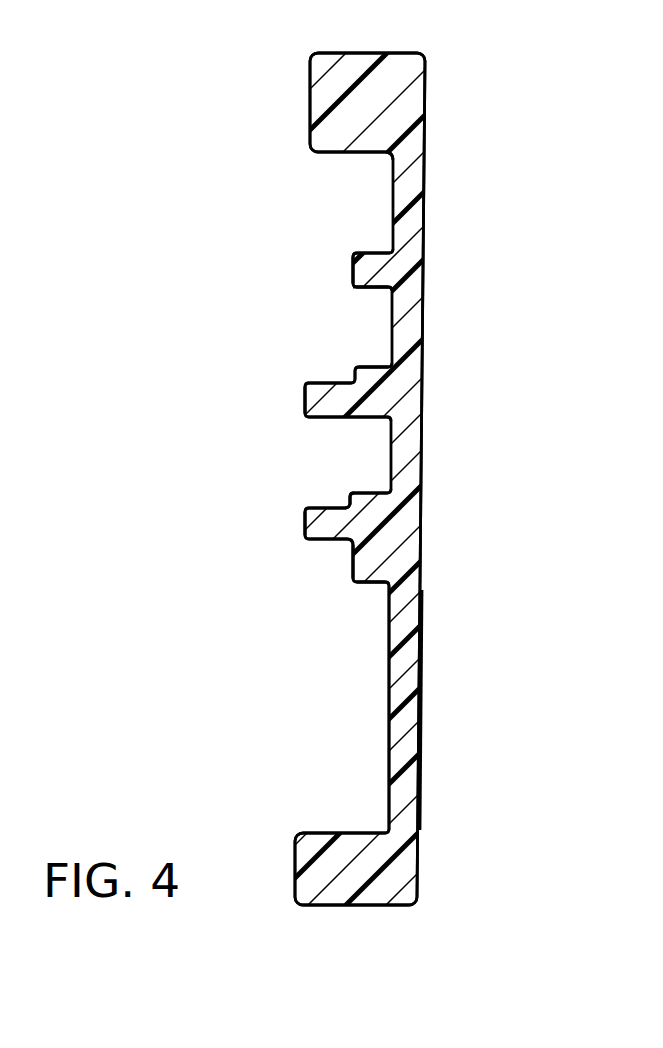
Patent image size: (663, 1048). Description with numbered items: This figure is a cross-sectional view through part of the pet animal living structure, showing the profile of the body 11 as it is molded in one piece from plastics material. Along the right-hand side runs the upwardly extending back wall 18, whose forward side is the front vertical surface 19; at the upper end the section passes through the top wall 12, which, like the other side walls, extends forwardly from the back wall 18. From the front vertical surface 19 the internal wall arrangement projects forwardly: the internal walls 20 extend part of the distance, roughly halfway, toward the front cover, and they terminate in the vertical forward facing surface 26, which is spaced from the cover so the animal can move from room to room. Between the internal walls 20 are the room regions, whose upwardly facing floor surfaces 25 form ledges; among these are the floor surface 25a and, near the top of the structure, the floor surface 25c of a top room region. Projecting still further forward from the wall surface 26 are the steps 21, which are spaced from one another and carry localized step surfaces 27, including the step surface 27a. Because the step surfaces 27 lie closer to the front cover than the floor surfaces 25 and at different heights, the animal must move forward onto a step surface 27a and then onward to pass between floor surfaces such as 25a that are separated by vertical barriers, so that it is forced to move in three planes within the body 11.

The body 11 is at (436, 753).
The top wall 12 is at (436, 515).
The back wall 18 is at (422, 678).
The front vertical surface 19 is at (390, 180).
The internal walls 20 is at (360, 278).
The steps 21 is at (303, 402).
The floor surfaces 25 is at (355, 832).
The floor surface 25a is at (377, 493).
The floor surface 25c is at (372, 253).
The forward facing surface 26 is at (352, 267).
The step surfaces 27 is at (352, 377).
The step surface 27a is at (343, 504).